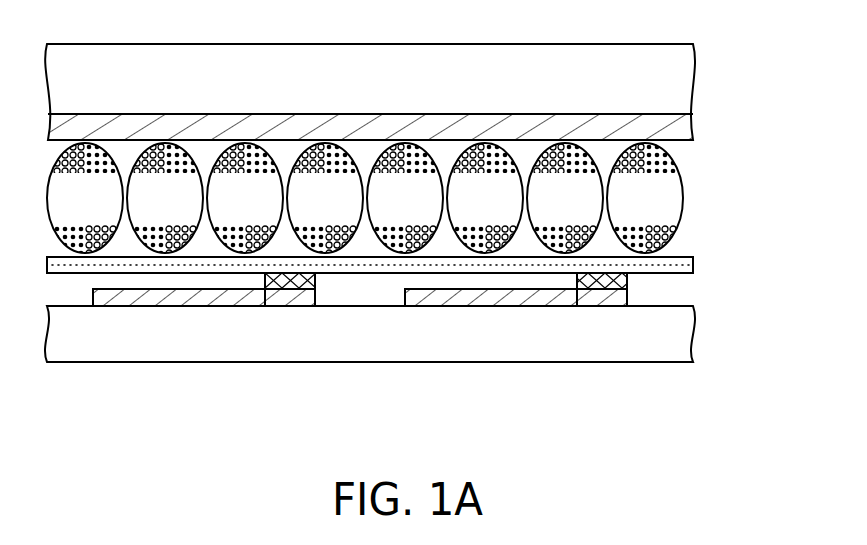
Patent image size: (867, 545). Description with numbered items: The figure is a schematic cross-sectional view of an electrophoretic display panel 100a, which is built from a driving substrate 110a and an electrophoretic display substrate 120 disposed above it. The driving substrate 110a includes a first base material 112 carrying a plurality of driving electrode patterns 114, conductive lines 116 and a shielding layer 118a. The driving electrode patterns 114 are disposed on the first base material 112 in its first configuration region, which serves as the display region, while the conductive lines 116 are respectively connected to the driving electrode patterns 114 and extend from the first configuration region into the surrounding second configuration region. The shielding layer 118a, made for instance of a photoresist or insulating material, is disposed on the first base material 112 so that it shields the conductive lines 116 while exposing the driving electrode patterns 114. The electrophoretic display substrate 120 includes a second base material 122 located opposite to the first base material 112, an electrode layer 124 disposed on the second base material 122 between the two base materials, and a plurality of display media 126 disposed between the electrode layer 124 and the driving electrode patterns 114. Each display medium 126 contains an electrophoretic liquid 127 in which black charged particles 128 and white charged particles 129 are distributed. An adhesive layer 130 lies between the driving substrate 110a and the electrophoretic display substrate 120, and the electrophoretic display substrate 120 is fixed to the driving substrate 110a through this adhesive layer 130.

The electrophoretic display panel 100a is at (698, 387).
The driving substrate 110a is at (370, 366).
The first base material 112 is at (532, 345).
The driving electrode patterns 114 is at (493, 300).
The conductive lines 116 is at (587, 300).
The shielding layer 118a is at (474, 416).
The electrophoretic display substrate 120 is at (438, 149).
The second base material 122 is at (677, 75).
The electrode layer 124 is at (677, 125).
The display media 126 is at (413, 199).
The electrophoretic liquid 127 is at (683, 196).
The black charged particles 128 is at (680, 168).
The white charged particles 129 is at (680, 222).
The adhesive layer 130 is at (678, 265).